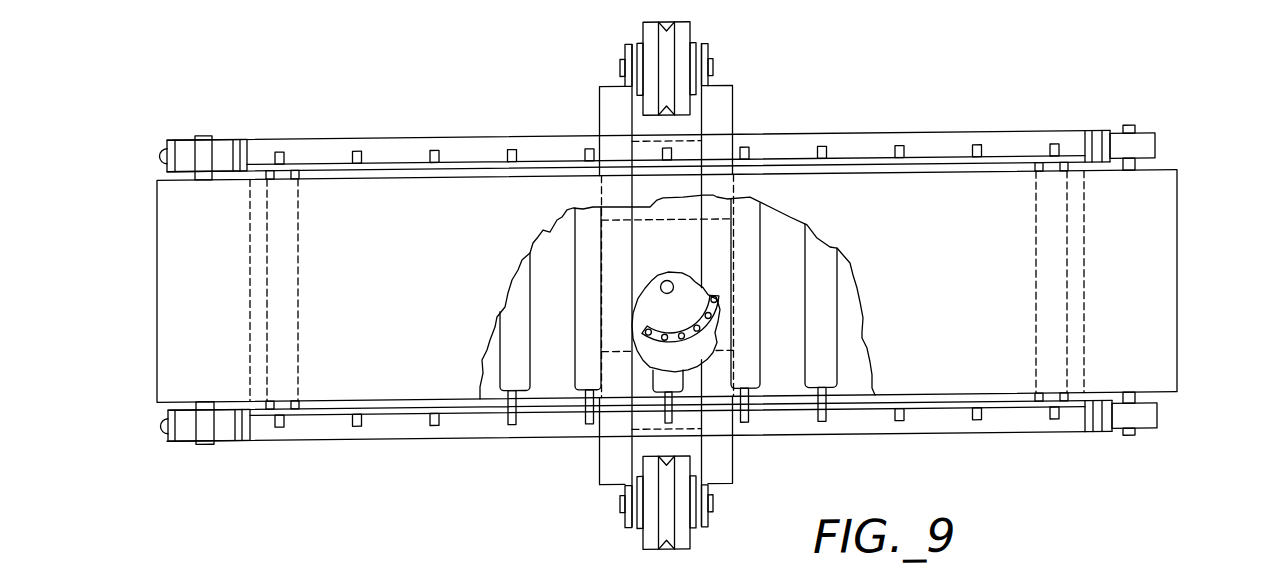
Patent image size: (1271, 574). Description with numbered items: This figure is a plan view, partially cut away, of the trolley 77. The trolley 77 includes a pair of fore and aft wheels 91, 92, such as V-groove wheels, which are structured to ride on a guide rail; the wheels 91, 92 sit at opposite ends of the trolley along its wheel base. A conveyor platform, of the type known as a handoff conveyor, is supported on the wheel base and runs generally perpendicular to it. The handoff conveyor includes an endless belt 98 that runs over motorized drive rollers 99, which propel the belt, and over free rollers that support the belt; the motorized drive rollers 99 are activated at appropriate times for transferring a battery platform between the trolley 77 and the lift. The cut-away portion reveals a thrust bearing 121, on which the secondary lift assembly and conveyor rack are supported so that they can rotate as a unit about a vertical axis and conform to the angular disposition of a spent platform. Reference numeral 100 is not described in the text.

The trolley 77 is at (350, 132).
The endless belt 98 is at (397, 201).
The motorized drive rollers 99 is at (168, 282).
The slats 100 is at (300, 333).
The thrust bearing 121 is at (699, 299).
The wheel 92 is at (688, 39).
The V-groove wheel 91 is at (692, 547).